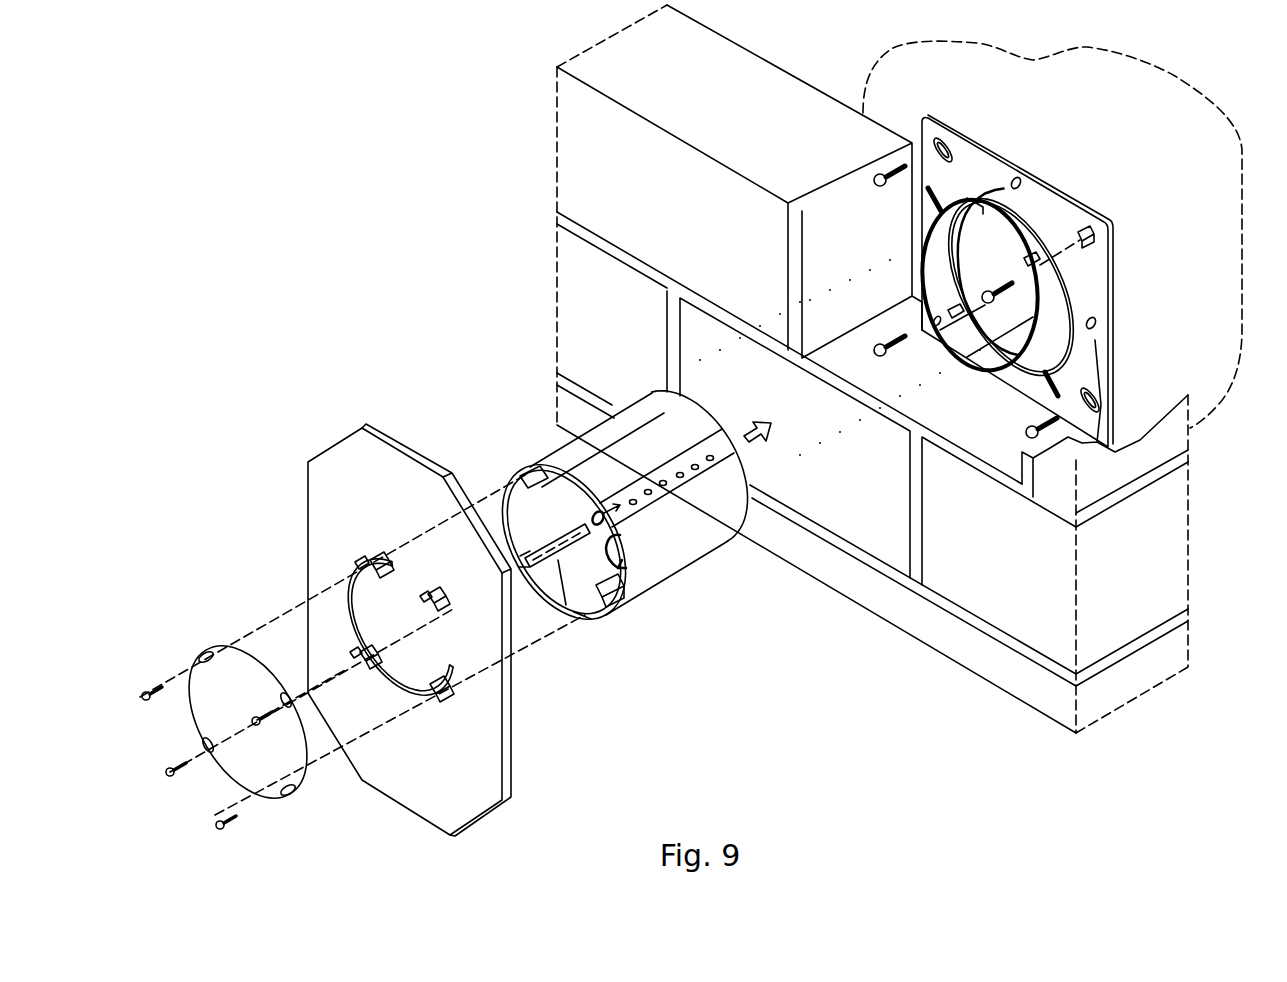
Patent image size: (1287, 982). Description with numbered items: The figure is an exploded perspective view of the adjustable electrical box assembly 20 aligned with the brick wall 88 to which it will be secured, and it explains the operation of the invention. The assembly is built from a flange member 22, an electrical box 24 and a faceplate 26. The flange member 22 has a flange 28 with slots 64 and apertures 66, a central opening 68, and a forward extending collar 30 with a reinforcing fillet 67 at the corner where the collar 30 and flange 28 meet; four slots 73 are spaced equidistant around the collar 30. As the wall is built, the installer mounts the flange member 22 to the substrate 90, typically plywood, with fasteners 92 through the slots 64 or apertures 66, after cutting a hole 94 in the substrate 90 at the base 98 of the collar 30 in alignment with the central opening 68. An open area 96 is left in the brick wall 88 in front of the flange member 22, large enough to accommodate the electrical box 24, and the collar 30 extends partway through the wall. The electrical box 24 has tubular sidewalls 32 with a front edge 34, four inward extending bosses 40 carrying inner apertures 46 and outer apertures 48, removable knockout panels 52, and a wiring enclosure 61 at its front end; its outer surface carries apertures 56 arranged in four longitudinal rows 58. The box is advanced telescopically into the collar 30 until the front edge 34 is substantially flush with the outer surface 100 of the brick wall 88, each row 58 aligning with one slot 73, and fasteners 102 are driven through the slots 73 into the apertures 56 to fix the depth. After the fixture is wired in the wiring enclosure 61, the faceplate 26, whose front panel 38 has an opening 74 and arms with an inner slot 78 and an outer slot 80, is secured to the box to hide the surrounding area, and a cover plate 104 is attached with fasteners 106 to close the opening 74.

The adjustable electrical box assembly 20 is at (288, 236).
The flange member 22 is at (1147, 228).
The electrical box 24 is at (515, 438).
The faceplate 26 is at (275, 490).
The flange 28 is at (956, 186).
The collar 30 is at (992, 236).
The sidewalls 32 is at (634, 472).
The front edge 34 is at (587, 626).
The front panel 38 is at (456, 616).
The inward extending bosses 40 is at (530, 478).
The inner apertures 46 is at (636, 577).
The outer apertures 48 is at (645, 605).
The removable knockout panels 52 is at (615, 538).
The apertures 56 is at (680, 478).
The rows of apertures 58 is at (594, 517).
The wiring enclosure 61 is at (563, 600).
The slots 64 is at (945, 152).
The apertures 66 is at (1017, 183).
The fillet 67 is at (1073, 306).
The central opening 68 is at (940, 285).
The slots 73 is at (1035, 262).
The opening 74 is at (440, 655).
The inner slot 78 is at (378, 566).
The outer slot 80 is at (366, 558).
The brick wall 88 is at (1140, 555).
The substrate 90 is at (926, 86).
The fasteners 92 is at (884, 176).
The hole 94 is at (969, 270).
The open area 96 is at (820, 277).
The base 98 is at (1000, 292).
The outer surface 100 is at (993, 512).
The fasteners 102 is at (935, 200).
The cover plate 104 is at (212, 704).
The fasteners 106 is at (148, 690).